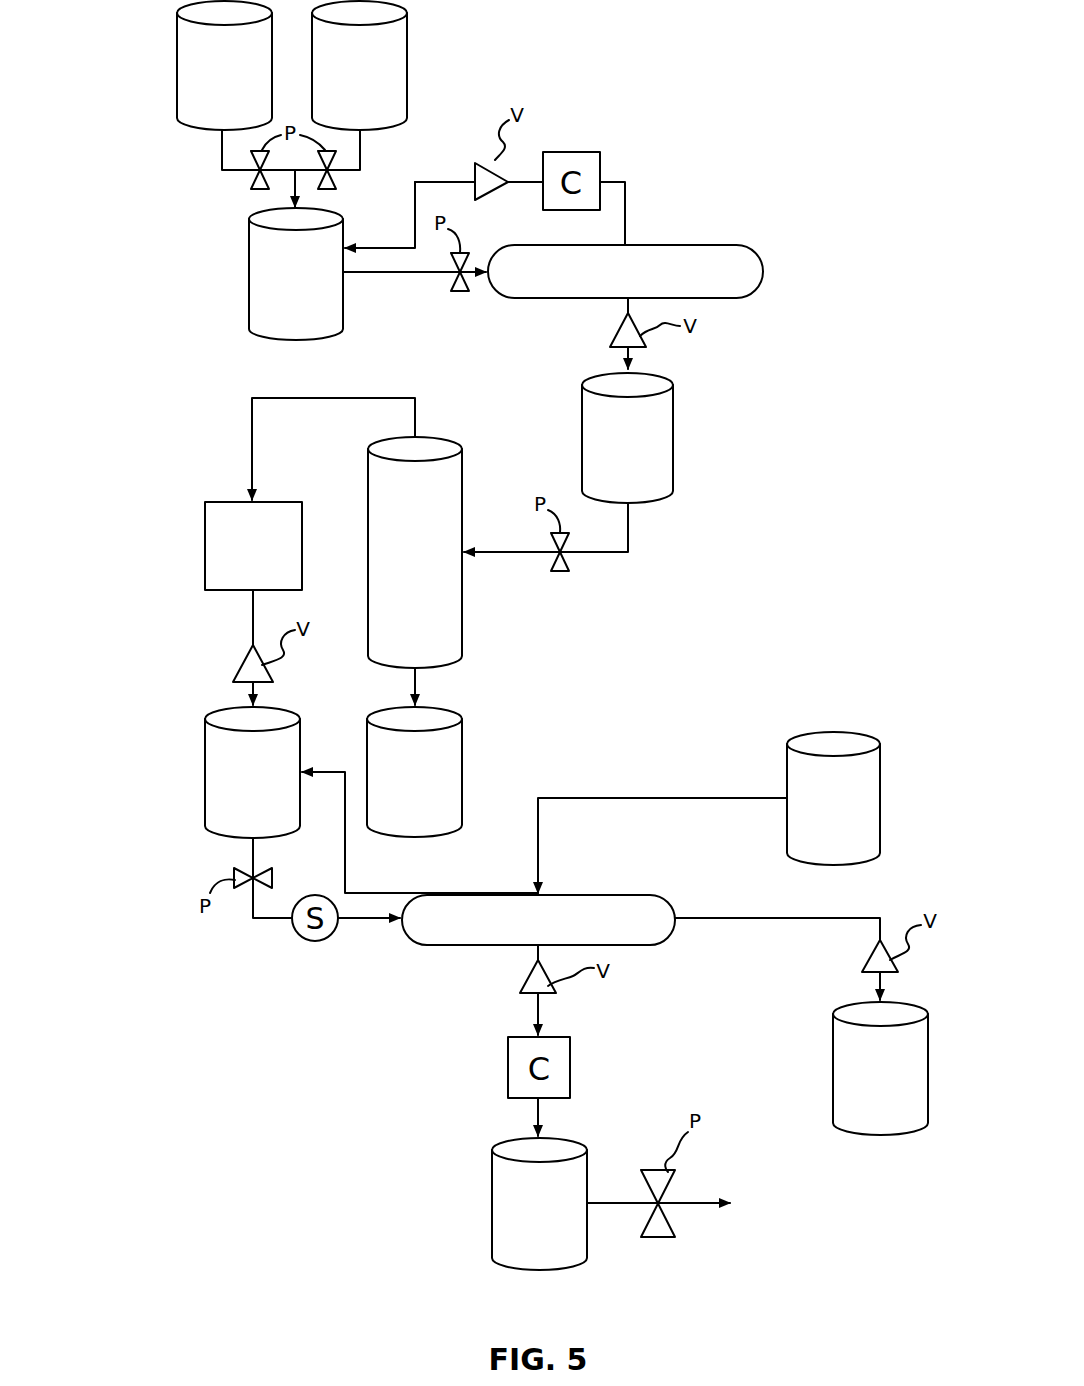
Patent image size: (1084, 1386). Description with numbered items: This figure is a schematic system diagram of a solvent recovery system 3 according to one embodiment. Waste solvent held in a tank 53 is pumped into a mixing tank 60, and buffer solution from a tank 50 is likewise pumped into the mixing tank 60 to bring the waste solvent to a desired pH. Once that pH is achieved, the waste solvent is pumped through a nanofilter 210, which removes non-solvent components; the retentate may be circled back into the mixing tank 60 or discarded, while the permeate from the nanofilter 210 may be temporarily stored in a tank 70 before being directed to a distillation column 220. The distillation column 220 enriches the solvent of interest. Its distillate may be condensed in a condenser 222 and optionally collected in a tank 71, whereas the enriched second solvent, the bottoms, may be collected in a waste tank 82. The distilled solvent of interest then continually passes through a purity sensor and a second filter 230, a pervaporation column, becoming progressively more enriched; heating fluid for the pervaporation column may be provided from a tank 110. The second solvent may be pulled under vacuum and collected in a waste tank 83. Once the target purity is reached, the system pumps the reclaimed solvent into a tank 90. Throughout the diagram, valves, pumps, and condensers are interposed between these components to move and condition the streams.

The system 3 is at (128, 133).
The tank of waste solvent 53 is at (224, 65).
The tank 50 is at (359, 65).
The mixing tank 60 is at (296, 274).
The nanofilter 210 is at (625, 271).
The tank 70 is at (627, 438).
The condenser 222 is at (253, 546).
The distillation column 220 is at (415, 552).
The tank 71 is at (252, 772).
The waste tank 82 is at (414, 772).
The tank 110 is at (833, 798).
The second filter 230 is at (538, 920).
The tank 90 is at (880, 1068).
The waste tank 83 is at (539, 1204).